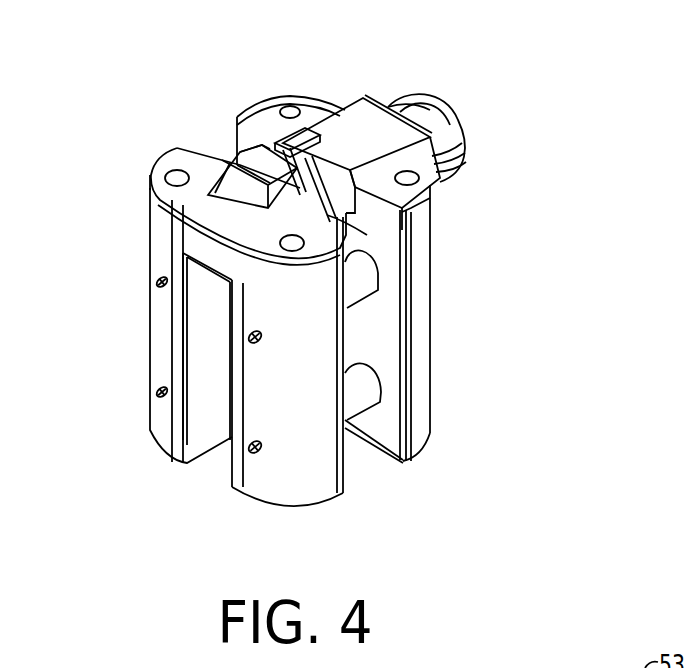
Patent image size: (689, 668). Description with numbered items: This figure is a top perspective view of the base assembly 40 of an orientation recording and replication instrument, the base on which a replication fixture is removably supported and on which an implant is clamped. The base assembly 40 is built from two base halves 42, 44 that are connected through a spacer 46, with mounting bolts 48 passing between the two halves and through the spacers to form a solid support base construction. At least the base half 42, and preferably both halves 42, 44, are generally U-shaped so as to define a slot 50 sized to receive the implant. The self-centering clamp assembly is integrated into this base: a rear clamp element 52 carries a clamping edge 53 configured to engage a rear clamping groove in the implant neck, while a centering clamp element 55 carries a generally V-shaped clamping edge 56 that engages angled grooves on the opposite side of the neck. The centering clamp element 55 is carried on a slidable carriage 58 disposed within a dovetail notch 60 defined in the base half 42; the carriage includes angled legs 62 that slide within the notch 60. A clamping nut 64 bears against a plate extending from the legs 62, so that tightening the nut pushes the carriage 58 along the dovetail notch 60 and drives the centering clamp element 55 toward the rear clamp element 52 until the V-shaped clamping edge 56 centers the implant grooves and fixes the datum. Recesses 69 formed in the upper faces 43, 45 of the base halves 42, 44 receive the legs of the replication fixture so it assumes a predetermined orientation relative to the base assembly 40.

The base assembly 40 is at (434, 362).
The base half 42 is at (417, 433).
The upper face 43 is at (262, 110).
The base half 44 is at (300, 495).
The upper face 45 is at (152, 190).
The spacer 46 is at (365, 382).
The mounting bolts 48 is at (157, 287).
The slot 50 is at (193, 437).
The rear clamp element 52 is at (255, 172).
The clamping edge 53 is at (240, 160).
The centering clamp element 55 is at (282, 112).
The V-shaped clamping edge 56 is at (369, 133).
The slidable carriage 58 is at (375, 113).
The dovetail notch 60 is at (353, 238).
The angled legs 62 is at (440, 150).
The clamping nut 64 is at (428, 120).
The recesses 69 is at (177, 177).